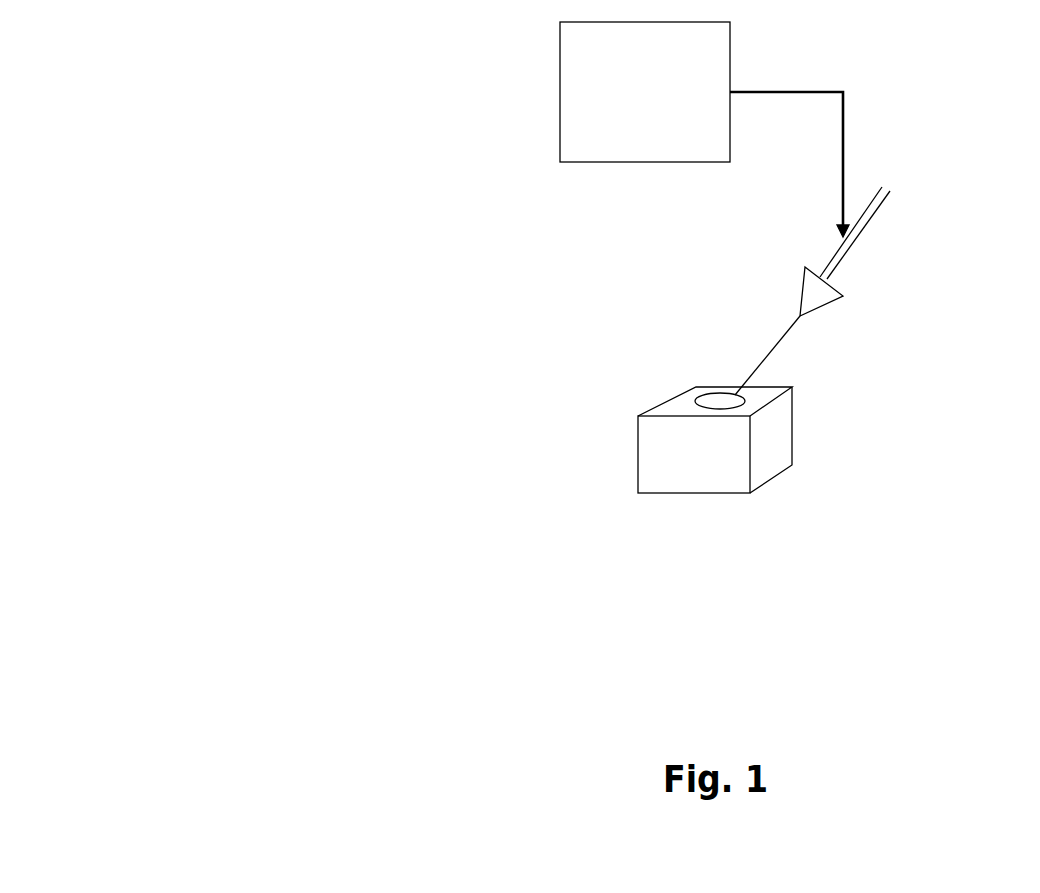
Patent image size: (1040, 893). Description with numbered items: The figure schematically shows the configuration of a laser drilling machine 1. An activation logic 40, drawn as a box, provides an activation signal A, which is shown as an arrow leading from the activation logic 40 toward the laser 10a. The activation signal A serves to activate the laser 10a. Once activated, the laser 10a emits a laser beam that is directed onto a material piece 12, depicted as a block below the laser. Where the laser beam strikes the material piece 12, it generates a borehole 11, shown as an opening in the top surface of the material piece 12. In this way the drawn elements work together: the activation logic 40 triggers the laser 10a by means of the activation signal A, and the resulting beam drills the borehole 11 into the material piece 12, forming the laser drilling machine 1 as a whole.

The laser drilling machine 1 is at (288, 67).
The activation logic 40 is at (545, 30).
The activation signal A is at (852, 95).
The laser 10a is at (900, 235).
The borehole 11 is at (687, 400).
The material piece 12 is at (778, 436).